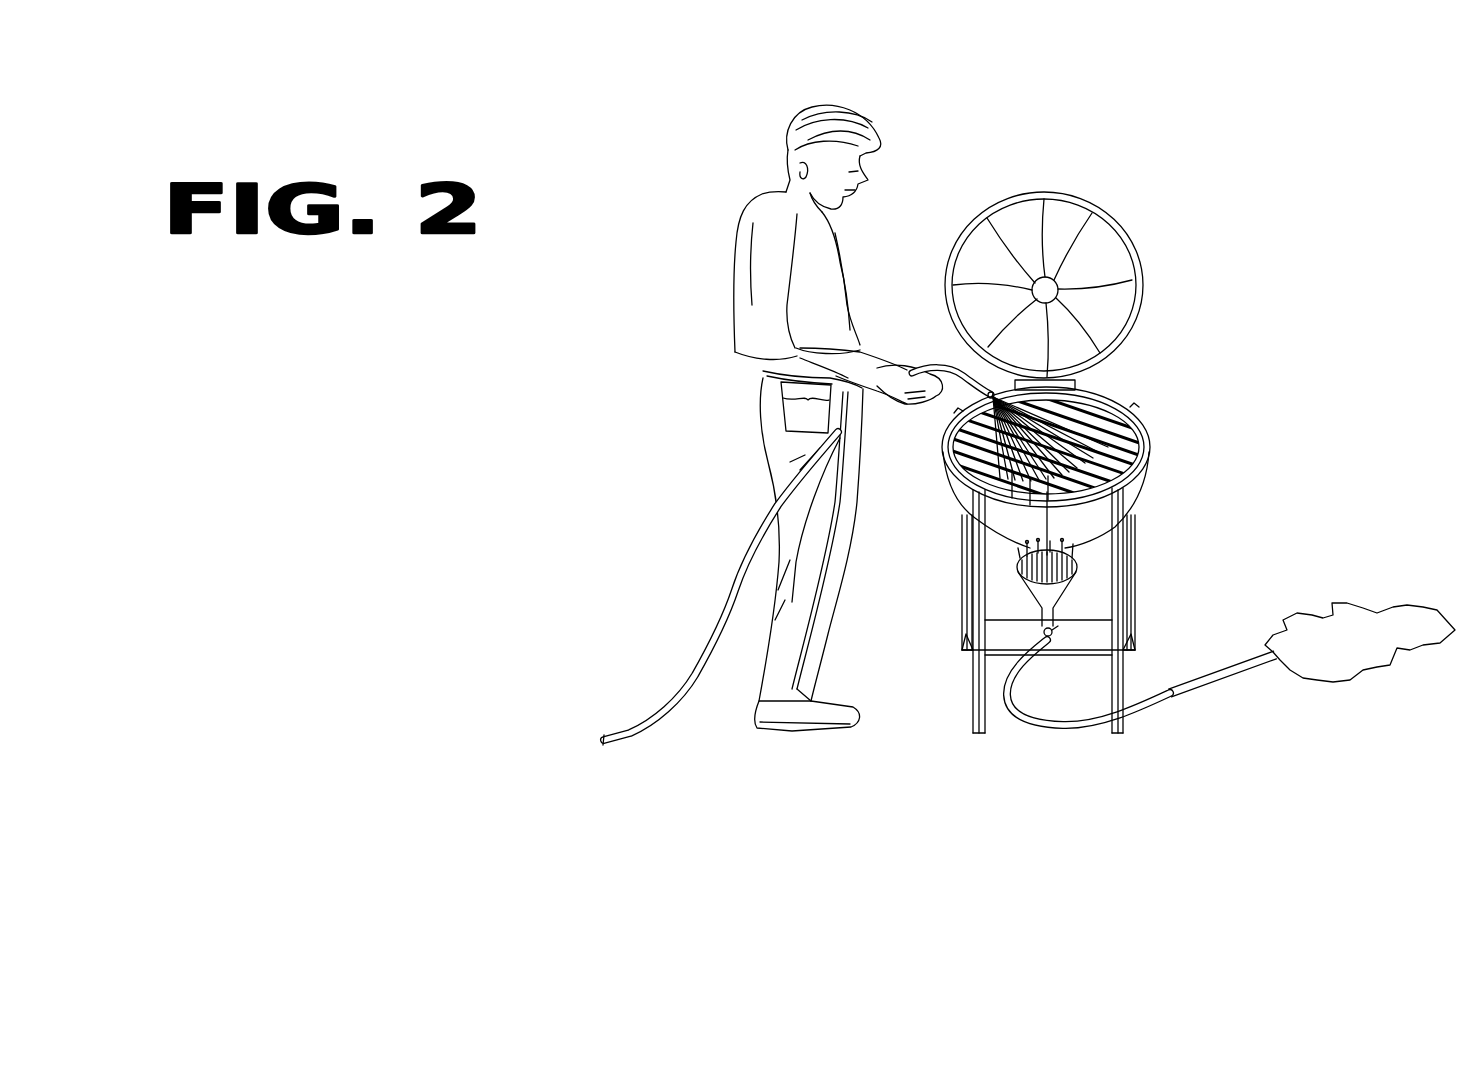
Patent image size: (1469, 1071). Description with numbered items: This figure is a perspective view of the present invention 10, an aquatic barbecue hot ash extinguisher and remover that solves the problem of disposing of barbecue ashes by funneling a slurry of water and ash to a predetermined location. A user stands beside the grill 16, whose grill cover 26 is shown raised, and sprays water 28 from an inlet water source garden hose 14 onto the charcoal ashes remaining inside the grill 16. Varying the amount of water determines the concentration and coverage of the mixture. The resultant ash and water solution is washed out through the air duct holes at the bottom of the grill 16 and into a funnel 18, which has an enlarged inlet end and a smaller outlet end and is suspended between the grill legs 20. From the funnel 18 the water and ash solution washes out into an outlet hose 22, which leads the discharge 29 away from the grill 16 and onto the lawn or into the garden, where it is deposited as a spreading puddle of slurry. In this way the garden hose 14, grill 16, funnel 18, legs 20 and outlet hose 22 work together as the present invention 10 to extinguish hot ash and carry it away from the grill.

The present invention 10 is at (948, 743).
The inlet water source garden hose 14 is at (635, 742).
The grill 16 is at (1143, 433).
The funnel 18 is at (1073, 566).
The grill legs 20 is at (1130, 677).
The outlet hose 22 is at (1077, 730).
The grill cover 26 is at (1038, 190).
The water 28 is at (1005, 393).
The discharge 29 is at (1348, 640).